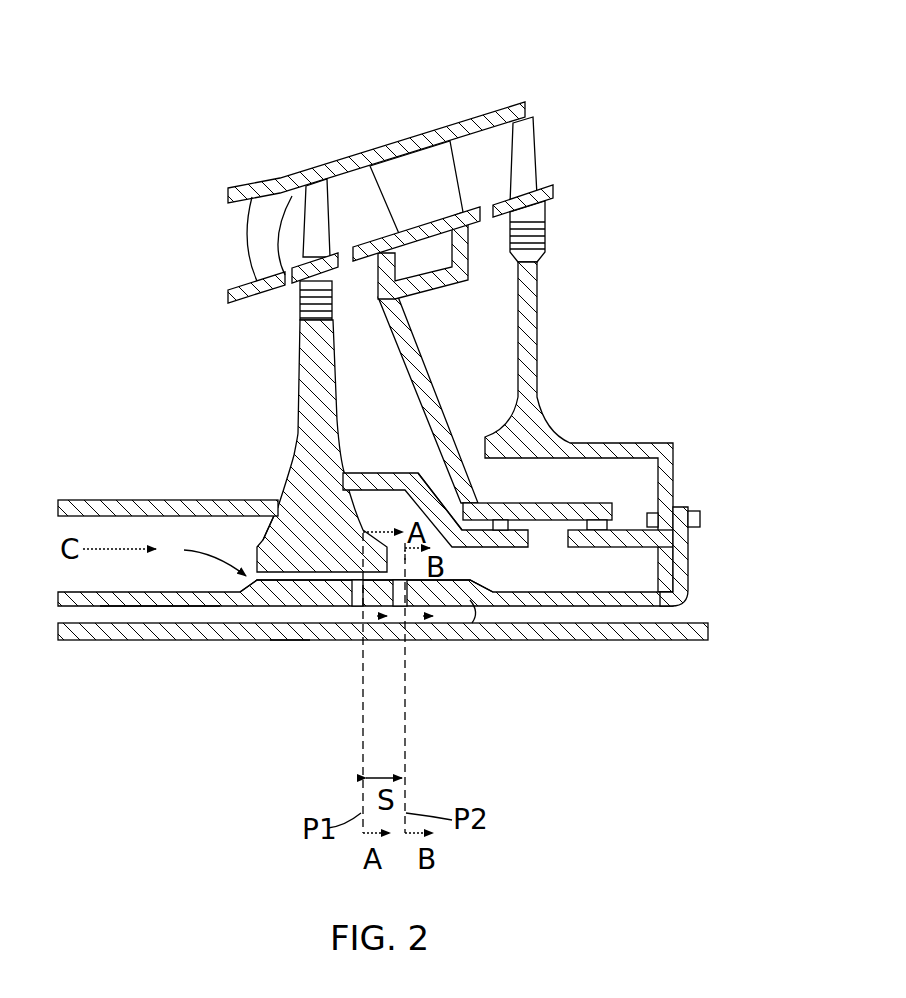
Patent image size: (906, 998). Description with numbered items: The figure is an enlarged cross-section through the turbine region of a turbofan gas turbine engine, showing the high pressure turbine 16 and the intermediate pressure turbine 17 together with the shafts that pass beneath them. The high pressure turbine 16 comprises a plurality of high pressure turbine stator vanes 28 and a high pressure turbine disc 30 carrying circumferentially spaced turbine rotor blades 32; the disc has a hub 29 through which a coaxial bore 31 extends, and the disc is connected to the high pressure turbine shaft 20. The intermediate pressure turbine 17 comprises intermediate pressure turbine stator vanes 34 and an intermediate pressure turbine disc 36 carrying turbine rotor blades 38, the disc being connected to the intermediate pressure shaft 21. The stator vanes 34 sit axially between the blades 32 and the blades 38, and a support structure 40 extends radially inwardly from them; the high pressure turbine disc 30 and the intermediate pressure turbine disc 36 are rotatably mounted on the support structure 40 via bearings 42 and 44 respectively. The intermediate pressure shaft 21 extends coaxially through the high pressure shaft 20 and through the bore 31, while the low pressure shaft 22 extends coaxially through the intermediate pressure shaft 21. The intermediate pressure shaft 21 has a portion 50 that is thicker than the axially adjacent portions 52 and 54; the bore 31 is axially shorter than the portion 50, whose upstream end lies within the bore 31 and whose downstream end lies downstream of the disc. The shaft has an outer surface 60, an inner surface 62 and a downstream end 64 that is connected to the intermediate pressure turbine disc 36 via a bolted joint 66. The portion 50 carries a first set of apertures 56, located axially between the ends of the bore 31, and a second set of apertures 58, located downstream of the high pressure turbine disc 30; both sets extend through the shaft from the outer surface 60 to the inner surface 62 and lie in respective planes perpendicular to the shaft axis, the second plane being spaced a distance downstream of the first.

The high pressure turbine 16 is at (276, 170).
The intermediate pressure turbine 17 is at (499, 96).
The high pressure turbine shaft 20 is at (178, 500).
The intermediate pressure shaft 21 is at (183, 608).
The low pressure shaft 22 is at (252, 642).
The high pressure turbine stator vanes 28 is at (254, 228).
The hub 29 is at (345, 522).
The high pressure turbine disc 30 is at (308, 397).
The bore 31 is at (278, 498).
The high pressure turbine rotor blades 32 is at (318, 220).
The intermediate pressure turbine stator vanes 34 is at (437, 163).
The intermediate pressure turbine disc 36 is at (537, 410).
The intermediate pressure turbine rotor blades 38 is at (527, 160).
The support structure 40 is at (412, 366).
The bearing 42 is at (505, 520).
The bearing 44 is at (600, 527).
The portion of intermediate pressure shaft 50 is at (445, 612).
The axially adjacent portion 52 is at (133, 608).
The axially adjacent portion 54 is at (558, 606).
The first set of apertures 56 is at (354, 607).
The second set of apertures 58 is at (409, 607).
The outer surface 60 is at (244, 591).
The inner surface 62 is at (286, 640).
The downstream end 64 is at (685, 562).
The bolted joint 66 is at (708, 502).